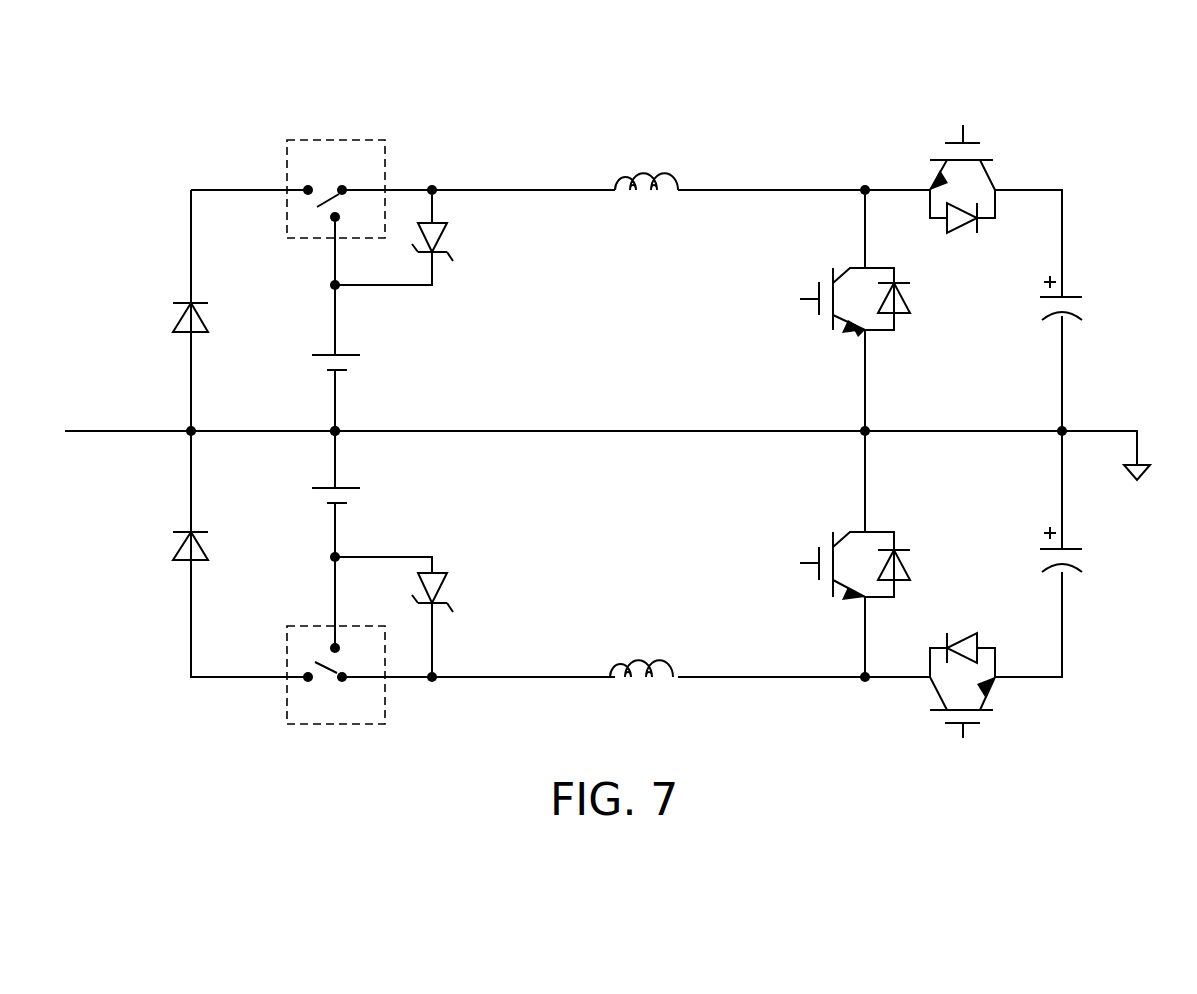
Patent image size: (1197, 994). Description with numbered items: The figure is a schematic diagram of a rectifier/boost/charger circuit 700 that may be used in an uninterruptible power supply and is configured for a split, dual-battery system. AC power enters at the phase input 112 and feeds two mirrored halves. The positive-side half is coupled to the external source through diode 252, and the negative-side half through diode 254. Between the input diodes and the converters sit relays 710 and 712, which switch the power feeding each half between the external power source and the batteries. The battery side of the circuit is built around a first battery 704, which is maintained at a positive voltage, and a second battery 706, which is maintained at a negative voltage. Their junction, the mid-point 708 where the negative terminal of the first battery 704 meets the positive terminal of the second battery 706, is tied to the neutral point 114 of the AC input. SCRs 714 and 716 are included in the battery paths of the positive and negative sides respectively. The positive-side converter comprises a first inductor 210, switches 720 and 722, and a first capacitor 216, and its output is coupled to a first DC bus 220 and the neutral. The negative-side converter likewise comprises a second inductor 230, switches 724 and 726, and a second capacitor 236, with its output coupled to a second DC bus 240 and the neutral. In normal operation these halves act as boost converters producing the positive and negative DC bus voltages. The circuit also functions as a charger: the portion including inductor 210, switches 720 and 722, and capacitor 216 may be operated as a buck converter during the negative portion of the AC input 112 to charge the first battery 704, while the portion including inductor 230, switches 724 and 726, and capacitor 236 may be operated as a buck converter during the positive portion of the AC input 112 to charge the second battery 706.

The rectifier/boost/charger circuit 700 is at (815, 136).
The phase input 112 is at (129, 435).
The diode 252 is at (190, 301).
The diode 254 is at (183, 563).
The relay 710 is at (375, 140).
The relay 712 is at (375, 724).
The SCR 714 is at (440, 223).
The SCR 716 is at (433, 572).
The first battery 704 is at (350, 353).
The second battery 706 is at (350, 486).
The mid-point 708 is at (340, 426).
The first inductor 210 is at (676, 166).
The second inductor 230 is at (652, 678).
The switch 722 is at (851, 268).
The switch 726 is at (832, 595).
The switch 720 is at (990, 158).
The switch 724 is at (933, 712).
The first capacitor 216 is at (1075, 312).
The second capacitor 236 is at (1075, 564).
The first DC bus 220 is at (1062, 215).
The second DC bus 240 is at (1062, 650).
The neutral point 114 is at (1085, 431).